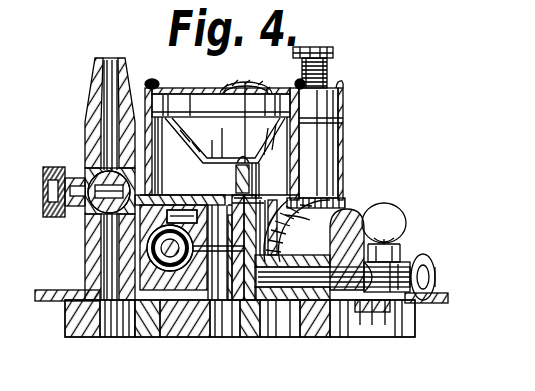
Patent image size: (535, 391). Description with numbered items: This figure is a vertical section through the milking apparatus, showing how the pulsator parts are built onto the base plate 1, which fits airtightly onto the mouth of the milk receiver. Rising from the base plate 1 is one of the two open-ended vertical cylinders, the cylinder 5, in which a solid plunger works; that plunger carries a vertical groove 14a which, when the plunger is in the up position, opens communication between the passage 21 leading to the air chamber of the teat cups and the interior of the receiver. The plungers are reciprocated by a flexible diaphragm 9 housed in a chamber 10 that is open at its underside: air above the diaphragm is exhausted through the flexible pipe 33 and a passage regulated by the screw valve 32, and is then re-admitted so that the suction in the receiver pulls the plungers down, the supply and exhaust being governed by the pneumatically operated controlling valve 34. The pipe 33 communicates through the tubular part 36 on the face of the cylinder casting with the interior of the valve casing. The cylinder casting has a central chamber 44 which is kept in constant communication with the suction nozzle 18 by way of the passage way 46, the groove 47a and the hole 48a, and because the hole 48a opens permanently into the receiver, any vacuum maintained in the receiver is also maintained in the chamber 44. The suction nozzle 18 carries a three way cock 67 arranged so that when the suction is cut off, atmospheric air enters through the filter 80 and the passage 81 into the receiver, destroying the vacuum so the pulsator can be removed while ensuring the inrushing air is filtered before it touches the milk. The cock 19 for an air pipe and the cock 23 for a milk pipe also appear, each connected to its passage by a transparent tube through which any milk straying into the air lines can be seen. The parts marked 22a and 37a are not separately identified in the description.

The base plate 1 is at (44, 296).
The cylinder 5 is at (256, 195).
The flexible diaphragm 9 is at (190, 143).
The chamber 10 is at (323, 138).
The vertical groove 14a is at (249, 300).
The suction nozzle 18 is at (96, 77).
The cock 19 is at (373, 212).
The passage 21 is at (297, 227).
The shaft 22a is at (332, 289).
The cock 23 is at (393, 250).
The screw valve 32 is at (320, 56).
The flexible pipe 33 is at (330, 204).
The controlling valve 34 is at (160, 301).
The tubular part 36 is at (208, 212).
The base portion 37a is at (222, 323).
The central chamber 44 is at (236, 300).
The passage way 46 is at (133, 297).
The groove 47a is at (88, 278).
The hole 48a is at (125, 280).
The three way cock 67 is at (100, 182).
The filter 80 is at (47, 190).
The passage 81 is at (86, 229).